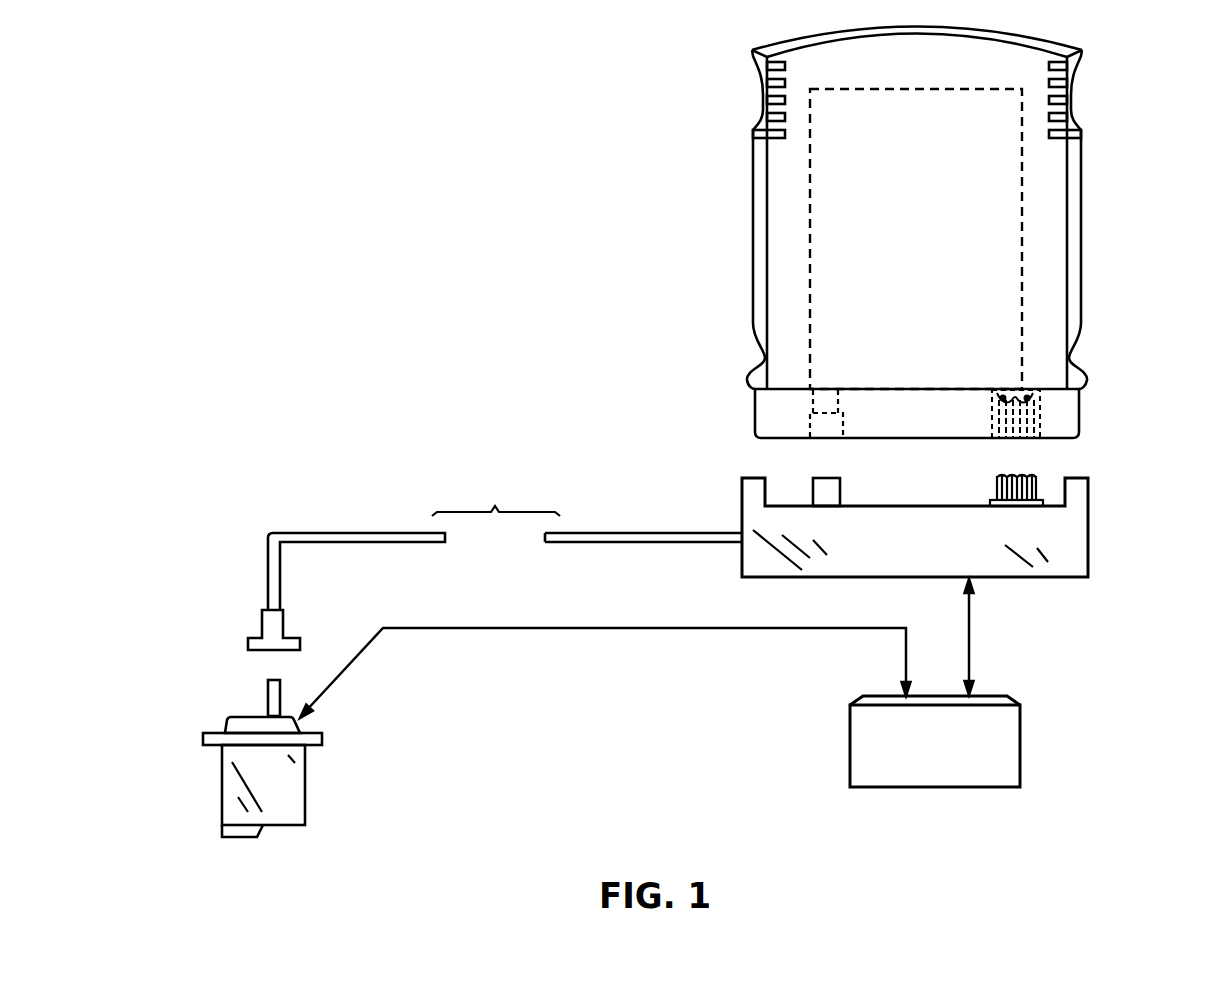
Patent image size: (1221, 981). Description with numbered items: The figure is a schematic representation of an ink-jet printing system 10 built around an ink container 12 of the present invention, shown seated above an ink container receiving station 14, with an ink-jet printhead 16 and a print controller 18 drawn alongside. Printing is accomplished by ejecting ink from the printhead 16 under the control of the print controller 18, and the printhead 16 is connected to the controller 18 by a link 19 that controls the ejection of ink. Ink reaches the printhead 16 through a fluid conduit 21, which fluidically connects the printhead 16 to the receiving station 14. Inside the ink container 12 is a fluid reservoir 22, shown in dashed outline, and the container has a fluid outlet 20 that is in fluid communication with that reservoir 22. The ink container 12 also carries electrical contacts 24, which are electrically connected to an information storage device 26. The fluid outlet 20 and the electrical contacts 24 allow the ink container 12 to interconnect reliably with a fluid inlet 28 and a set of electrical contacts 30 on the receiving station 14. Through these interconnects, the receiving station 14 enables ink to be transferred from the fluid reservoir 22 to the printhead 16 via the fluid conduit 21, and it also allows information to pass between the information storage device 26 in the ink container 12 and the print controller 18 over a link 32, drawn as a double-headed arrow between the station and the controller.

The ink-jet printing system 10 is at (612, 409).
The ink container 12 is at (1088, 213).
The ink container receiving station 14 is at (1092, 518).
The ink-jet printhead 16 is at (305, 777).
The print controller 18 is at (1022, 716).
The link 19 is at (505, 629).
The fluid outlet 20 is at (842, 450).
The fluid conduit 21 is at (405, 544).
The fluid reservoir 22 is at (810, 206).
The electrical contacts 24 is at (996, 450).
The information storage device 26 is at (1022, 391).
The fluid inlet 28 is at (808, 478).
The electrical contacts 30 is at (1035, 476).
The link 32 is at (972, 641).